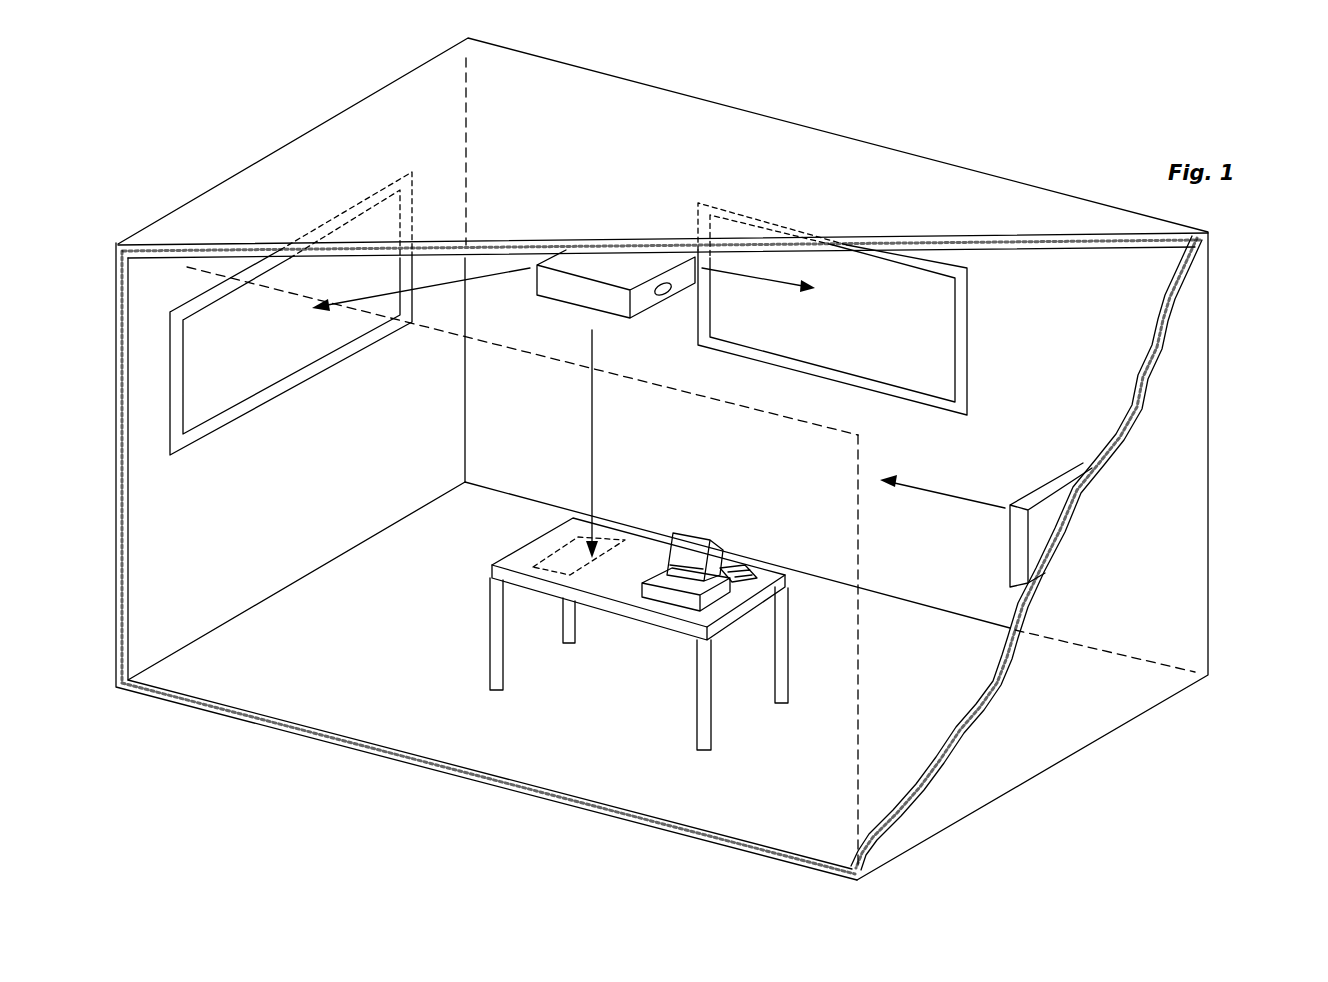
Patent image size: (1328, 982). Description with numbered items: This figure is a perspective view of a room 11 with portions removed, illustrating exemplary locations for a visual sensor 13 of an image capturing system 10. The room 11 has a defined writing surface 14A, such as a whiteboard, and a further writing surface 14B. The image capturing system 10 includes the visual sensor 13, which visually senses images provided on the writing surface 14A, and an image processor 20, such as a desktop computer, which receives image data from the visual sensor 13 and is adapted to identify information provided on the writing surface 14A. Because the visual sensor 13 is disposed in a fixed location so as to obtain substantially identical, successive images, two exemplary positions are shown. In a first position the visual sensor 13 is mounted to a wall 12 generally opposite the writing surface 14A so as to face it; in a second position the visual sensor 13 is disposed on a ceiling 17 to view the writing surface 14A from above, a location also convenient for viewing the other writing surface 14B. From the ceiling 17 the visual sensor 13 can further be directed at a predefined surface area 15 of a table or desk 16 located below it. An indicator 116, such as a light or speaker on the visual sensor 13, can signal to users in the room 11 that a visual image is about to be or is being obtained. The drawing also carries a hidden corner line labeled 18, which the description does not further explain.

The image capturing system 10 is at (650, 168).
The room 11 is at (288, 682).
The wall 12 is at (1137, 372).
The visual sensor 13 is at (562, 301).
The writing surface 14A is at (247, 380).
The writing surface 14B is at (938, 318).
The predefined surface area 15 is at (525, 536).
The table or desk 16 is at (613, 612).
The ceiling 17 is at (1093, 250).
The wall corner 18 is at (866, 677).
The image processor 20 is at (722, 512).
The indicator 116 is at (660, 298).